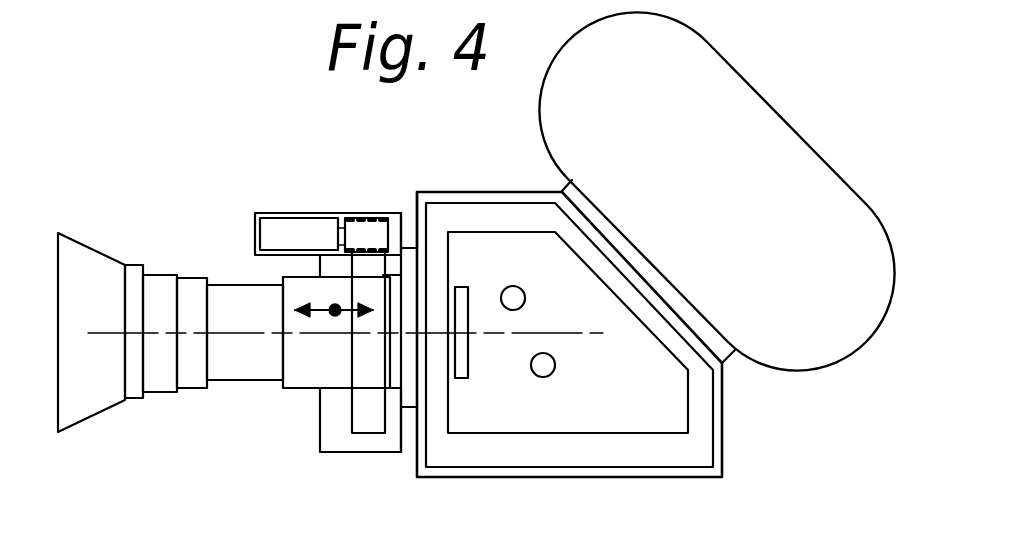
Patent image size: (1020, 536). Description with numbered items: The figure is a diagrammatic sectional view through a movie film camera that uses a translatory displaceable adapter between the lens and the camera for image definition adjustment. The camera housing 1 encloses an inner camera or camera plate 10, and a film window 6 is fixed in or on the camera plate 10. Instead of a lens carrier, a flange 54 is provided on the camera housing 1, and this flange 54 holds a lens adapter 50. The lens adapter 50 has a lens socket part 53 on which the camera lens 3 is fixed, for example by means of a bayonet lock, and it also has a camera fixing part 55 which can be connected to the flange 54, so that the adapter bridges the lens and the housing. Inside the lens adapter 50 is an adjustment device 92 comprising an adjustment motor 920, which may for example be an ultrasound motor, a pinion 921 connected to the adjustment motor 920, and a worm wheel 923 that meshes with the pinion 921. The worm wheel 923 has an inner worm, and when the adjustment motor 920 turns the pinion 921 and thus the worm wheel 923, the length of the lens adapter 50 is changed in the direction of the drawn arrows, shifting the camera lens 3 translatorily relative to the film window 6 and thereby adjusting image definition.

The camera housing 1 is at (717, 420).
The camera lens 3 is at (233, 355).
The film window 6 is at (463, 358).
The camera plate 10 is at (582, 410).
The lens adapter 50 is at (310, 363).
The lens socket part 53 is at (282, 277).
The flange 54 is at (402, 248).
The camera fixing part 55 is at (412, 417).
The adjustment device 92 is at (324, 213).
The adjustment motor 920 is at (290, 233).
The pinion 921 is at (367, 233).
The worm wheel 923 is at (363, 413).